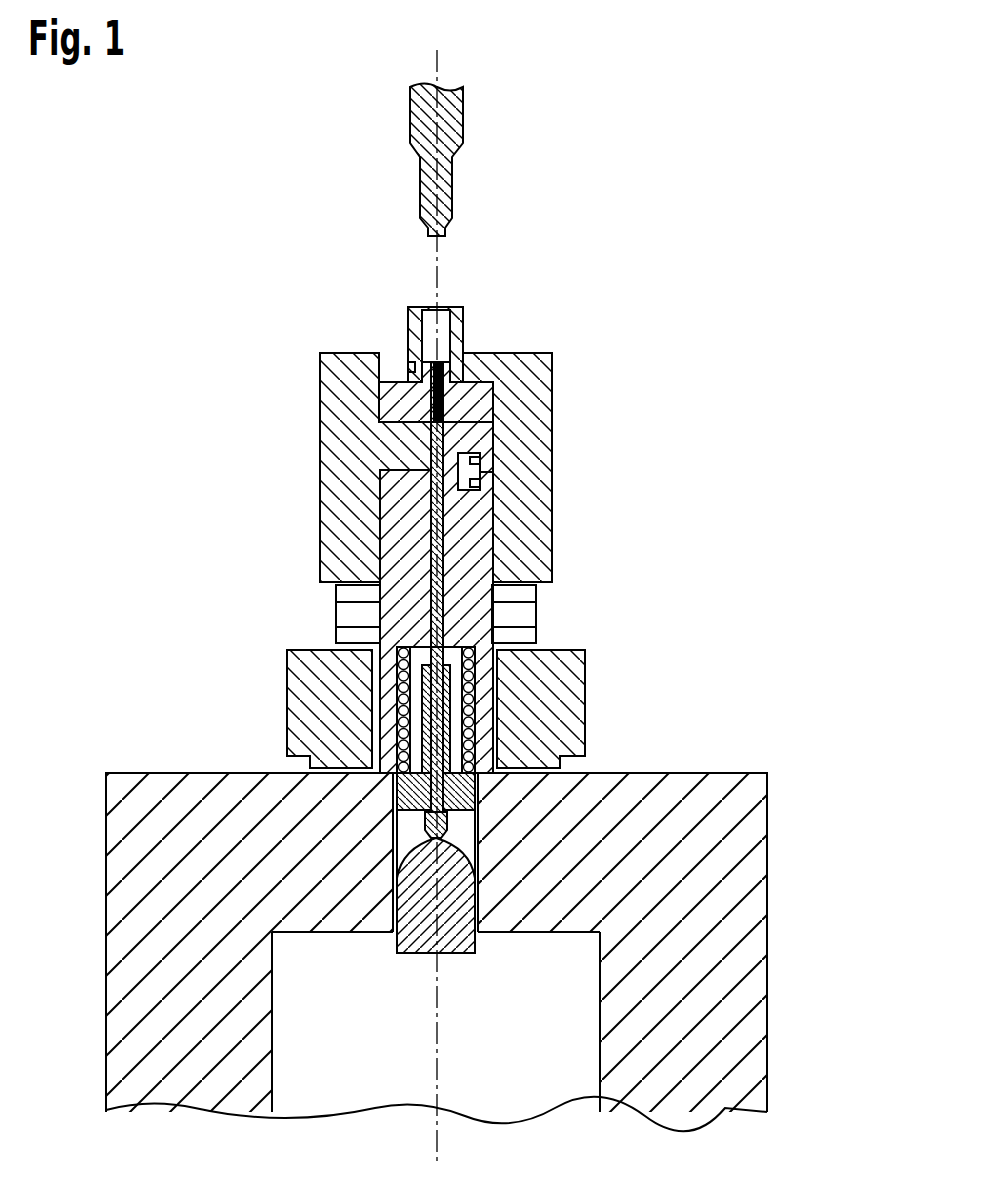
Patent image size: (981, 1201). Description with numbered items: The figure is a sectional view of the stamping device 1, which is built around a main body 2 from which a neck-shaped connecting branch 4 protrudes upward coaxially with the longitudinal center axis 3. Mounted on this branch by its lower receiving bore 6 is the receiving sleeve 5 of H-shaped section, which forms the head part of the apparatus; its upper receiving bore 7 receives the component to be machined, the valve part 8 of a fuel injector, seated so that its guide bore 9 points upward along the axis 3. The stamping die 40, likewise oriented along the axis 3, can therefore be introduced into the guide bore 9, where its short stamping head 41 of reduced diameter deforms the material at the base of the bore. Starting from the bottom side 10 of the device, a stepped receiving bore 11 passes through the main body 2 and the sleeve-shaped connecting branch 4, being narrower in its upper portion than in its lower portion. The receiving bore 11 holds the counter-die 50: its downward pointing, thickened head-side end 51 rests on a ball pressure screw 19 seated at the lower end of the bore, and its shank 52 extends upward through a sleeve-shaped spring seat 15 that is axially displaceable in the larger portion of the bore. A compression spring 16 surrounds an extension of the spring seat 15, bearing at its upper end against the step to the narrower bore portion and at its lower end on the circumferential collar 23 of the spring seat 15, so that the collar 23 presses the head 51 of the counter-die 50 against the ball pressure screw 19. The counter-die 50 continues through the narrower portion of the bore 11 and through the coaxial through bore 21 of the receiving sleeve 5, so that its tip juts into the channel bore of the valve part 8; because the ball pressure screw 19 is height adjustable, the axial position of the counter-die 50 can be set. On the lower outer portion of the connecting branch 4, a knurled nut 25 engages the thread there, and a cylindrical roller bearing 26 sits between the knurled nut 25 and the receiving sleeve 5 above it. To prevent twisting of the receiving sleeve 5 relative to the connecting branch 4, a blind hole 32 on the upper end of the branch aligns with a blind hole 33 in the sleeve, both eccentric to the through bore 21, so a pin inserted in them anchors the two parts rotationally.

The stamping device 1 is at (626, 139).
The main body 2 is at (471, 952).
The longitudinal center axis 3 is at (439, 1073).
The connecting branch 4 is at (333, 621).
The receiving sleeve 5 is at (445, 463).
The lower receiving bore 6 is at (538, 597).
The upper receiving bore 7 is at (384, 371).
The valve part 8 is at (448, 329).
The guide bore 9 is at (428, 320).
The bottom side 10 is at (540, 935).
The receiving bore 11 is at (250, 934).
The spring seat 15 is at (478, 823).
The compression spring 16 is at (474, 657).
The ball pressure screw 19 is at (413, 955).
The through bore 21 is at (432, 447).
The circumferential collar 23 is at (400, 798).
The knurled nut 25 is at (290, 674).
The cylindrical roller bearing 26 is at (334, 613).
The blind hole 32 is at (481, 488).
The blind hole 33 is at (480, 458).
The stamping die 40 is at (442, 182).
The stamping head 41 is at (432, 237).
The counter-die 50 is at (437, 625).
The head-side end 51 is at (456, 849).
The shank 52 is at (426, 548).